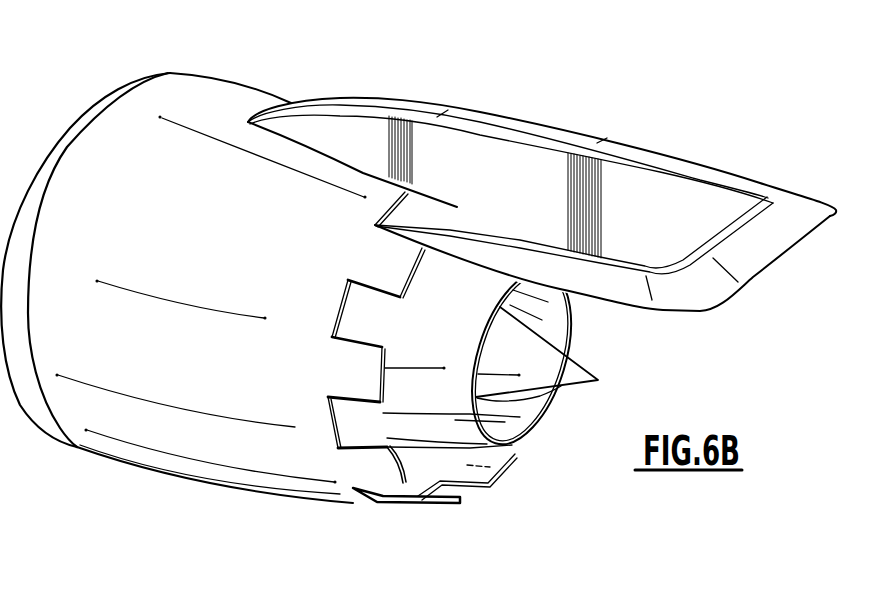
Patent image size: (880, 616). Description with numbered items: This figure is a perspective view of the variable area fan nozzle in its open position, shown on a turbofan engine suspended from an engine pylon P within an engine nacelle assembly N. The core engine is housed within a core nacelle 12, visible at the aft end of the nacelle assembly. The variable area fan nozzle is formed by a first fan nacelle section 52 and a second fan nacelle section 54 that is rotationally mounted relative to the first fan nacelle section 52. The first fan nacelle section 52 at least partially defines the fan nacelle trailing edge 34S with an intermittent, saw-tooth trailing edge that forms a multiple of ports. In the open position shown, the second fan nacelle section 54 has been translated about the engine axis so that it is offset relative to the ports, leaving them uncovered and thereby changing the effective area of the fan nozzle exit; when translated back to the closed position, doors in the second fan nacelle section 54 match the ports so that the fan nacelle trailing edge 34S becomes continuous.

The engine nacelle assembly N is at (283, 71).
The engine pylon P is at (648, 210).
The core nacelle 12 is at (523, 418).
The first fan nacelle section 52 is at (300, 478).
The second fan nacelle section 54 is at (473, 467).
The fan nacelle trailing edge 34S is at (441, 508).